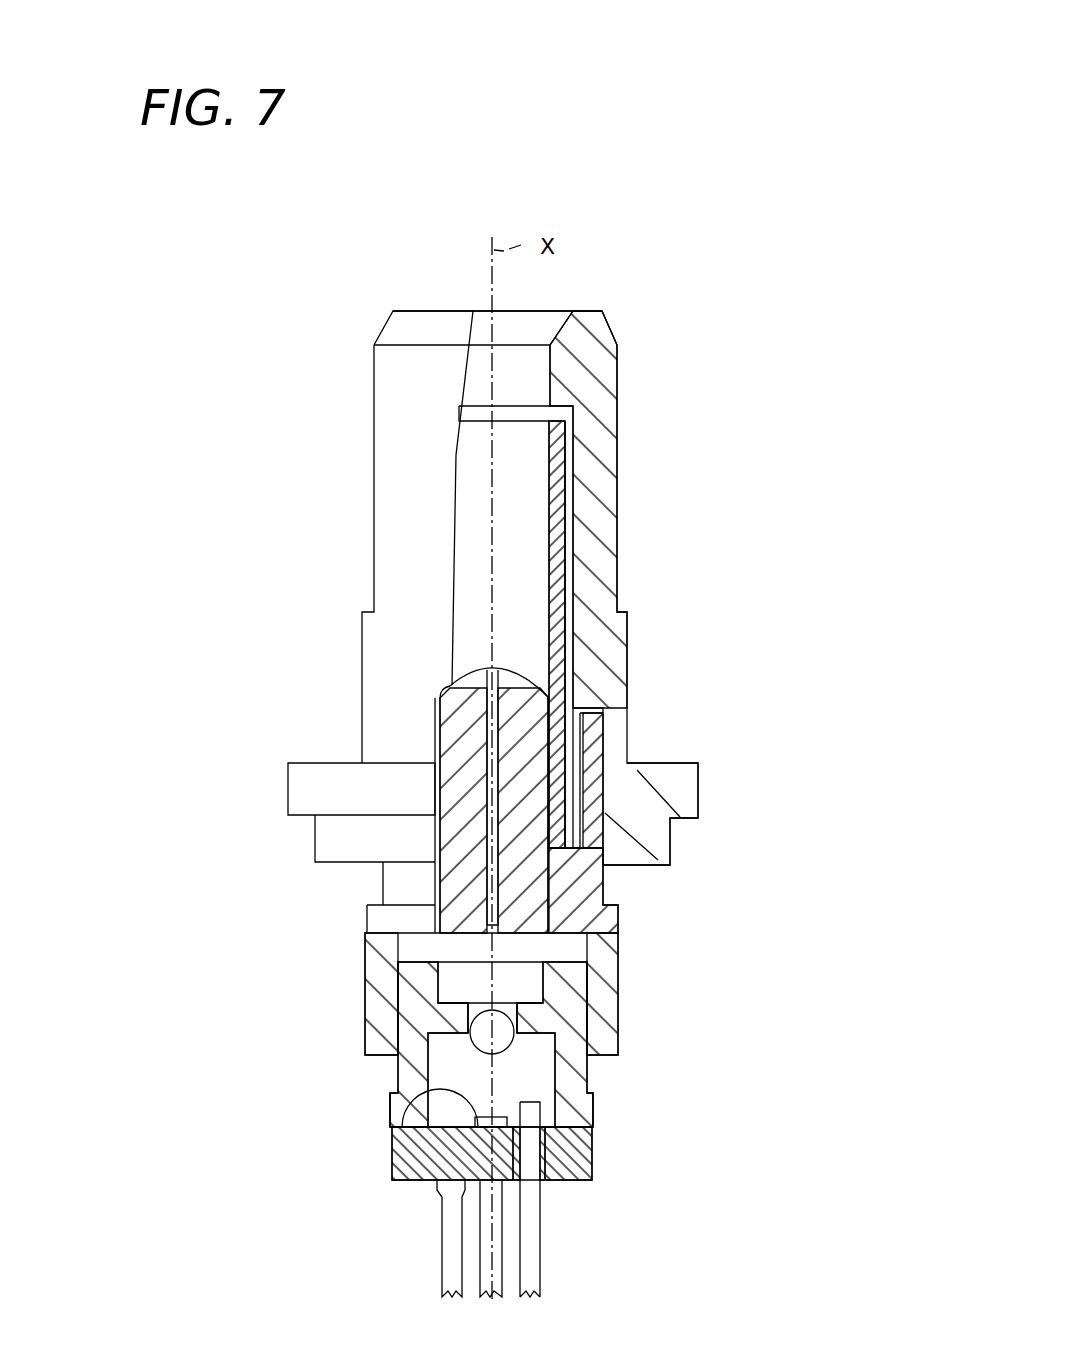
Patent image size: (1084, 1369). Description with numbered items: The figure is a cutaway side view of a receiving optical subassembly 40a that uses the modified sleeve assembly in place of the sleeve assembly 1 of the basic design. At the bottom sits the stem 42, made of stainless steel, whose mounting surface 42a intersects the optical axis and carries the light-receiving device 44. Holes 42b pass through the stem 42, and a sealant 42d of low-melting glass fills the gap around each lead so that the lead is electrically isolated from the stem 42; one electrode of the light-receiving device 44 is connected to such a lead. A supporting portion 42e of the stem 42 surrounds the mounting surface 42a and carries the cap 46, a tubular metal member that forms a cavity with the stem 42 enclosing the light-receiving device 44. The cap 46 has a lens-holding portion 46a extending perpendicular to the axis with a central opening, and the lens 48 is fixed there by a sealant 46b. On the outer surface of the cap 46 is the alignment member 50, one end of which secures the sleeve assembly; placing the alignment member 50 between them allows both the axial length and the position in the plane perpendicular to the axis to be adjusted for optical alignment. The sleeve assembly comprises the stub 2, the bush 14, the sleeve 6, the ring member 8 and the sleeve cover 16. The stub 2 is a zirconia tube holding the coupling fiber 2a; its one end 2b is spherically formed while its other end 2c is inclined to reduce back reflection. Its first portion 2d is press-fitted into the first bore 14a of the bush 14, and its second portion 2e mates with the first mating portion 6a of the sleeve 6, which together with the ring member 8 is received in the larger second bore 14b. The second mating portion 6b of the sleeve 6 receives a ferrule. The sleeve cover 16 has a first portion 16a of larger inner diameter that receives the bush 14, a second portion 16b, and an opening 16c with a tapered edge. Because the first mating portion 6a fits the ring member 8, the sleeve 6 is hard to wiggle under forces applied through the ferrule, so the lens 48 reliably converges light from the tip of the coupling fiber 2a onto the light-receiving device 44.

The sleeve assembly 1 is at (866, 322).
The stub 2 is at (275, 650).
The coupling fiber 2a is at (483, 668).
The one end of the stub 2b is at (473, 672).
The other end of the stub 2c is at (447, 948).
The first portion of the stub 2d is at (437, 890).
The second portion of the stub 2e is at (437, 780).
The sleeve 6 is at (722, 533).
The first mating portion 6a is at (553, 720).
The second mating portion 6b is at (553, 520).
The ring member 8 is at (583, 733).
The bush 14 is at (792, 862).
The first bore 14a is at (555, 882).
The second bore 14b is at (587, 820).
The sleeve cover 16 is at (796, 342).
The first portion of the sleeve cover 16a is at (643, 792).
The second portion of the sleeve cover 16b is at (600, 434).
The opening 16c is at (575, 348).
The optical subassembly 40a is at (723, 317).
The stem 42 is at (590, 1158).
The mounting surface 42a is at (425, 1183).
The holes 42b is at (547, 1183).
The sealant 42d is at (590, 1183).
The cap supporting portion 42e is at (593, 1137).
The light-receiving device 44 is at (440, 1105).
The cap 46 is at (570, 1072).
The lens-holding portion 46a is at (517, 1020).
The sealant 46b is at (433, 1105).
The lens 48 is at (468, 1030).
The alignment member 50 is at (605, 953).